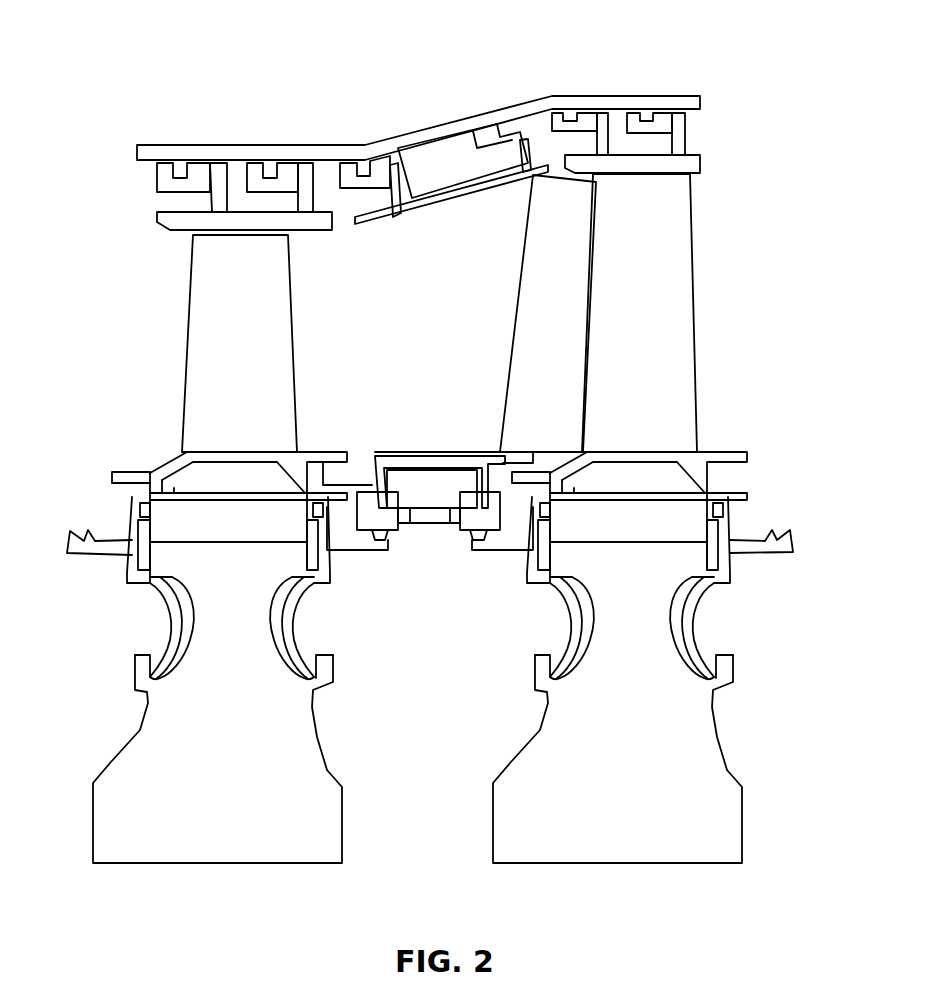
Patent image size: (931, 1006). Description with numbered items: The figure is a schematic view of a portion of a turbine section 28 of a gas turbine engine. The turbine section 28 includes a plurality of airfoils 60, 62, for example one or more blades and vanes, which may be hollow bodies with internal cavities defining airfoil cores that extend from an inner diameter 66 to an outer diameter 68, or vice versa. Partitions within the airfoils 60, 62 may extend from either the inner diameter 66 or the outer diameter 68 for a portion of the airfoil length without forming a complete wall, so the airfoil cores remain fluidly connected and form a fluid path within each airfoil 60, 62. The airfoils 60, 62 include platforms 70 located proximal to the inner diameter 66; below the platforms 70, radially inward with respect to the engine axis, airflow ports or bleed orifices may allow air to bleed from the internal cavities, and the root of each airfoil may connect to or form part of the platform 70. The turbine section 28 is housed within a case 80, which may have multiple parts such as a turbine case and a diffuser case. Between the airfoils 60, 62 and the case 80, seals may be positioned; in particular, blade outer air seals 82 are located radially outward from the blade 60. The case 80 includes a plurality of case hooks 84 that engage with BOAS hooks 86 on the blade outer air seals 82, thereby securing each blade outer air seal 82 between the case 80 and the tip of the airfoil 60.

The turbine section 28 is at (105, 50).
The airfoil 60 is at (278, 280).
The airfoil 62 is at (498, 265).
The inner diameter 66 is at (373, 447).
The outer diameter 68 is at (157, 255).
The platform 70 is at (518, 453).
The case 80 is at (453, 130).
The blade outer air seal 82 is at (228, 220).
The case hook 84 is at (157, 172).
The BOAS hook 86 is at (215, 173).